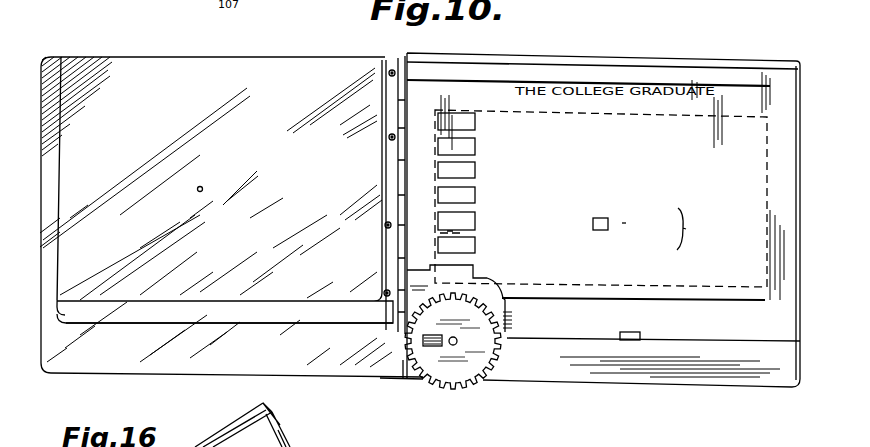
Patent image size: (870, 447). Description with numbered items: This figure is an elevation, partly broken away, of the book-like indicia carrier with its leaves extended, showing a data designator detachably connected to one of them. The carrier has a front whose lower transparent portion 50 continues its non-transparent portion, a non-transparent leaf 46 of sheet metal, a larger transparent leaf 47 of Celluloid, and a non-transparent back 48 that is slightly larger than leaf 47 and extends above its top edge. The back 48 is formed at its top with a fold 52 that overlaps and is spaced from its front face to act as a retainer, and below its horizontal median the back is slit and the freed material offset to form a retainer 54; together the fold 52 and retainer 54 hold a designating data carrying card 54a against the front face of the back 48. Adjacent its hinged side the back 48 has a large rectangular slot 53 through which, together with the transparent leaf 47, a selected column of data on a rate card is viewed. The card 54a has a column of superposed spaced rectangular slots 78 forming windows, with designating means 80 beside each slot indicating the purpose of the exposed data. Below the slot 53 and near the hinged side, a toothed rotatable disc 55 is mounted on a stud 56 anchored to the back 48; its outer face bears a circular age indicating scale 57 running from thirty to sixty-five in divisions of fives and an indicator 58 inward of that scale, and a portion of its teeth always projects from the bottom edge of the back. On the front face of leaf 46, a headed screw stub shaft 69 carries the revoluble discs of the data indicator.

The leaf 46 is at (293, 314).
The leaf 47 is at (226, 369).
The back 48 is at (752, 383).
The transparent portion 50 is at (147, 319).
The fold 52 is at (692, 63).
The rectangular slot 53 is at (482, 108).
The retainer 54 is at (627, 338).
The designating data carrying card 54a is at (741, 306).
The toothed rotatable disc 55 is at (466, 352).
The stud 56 is at (458, 341).
The age indicating scale 57 is at (432, 377).
The indicator 58 is at (427, 346).
The headed screw stub shaft 69 is at (203, 188).
The rectangular slots 78 is at (462, 120).
The designating means 80 is at (688, 132).